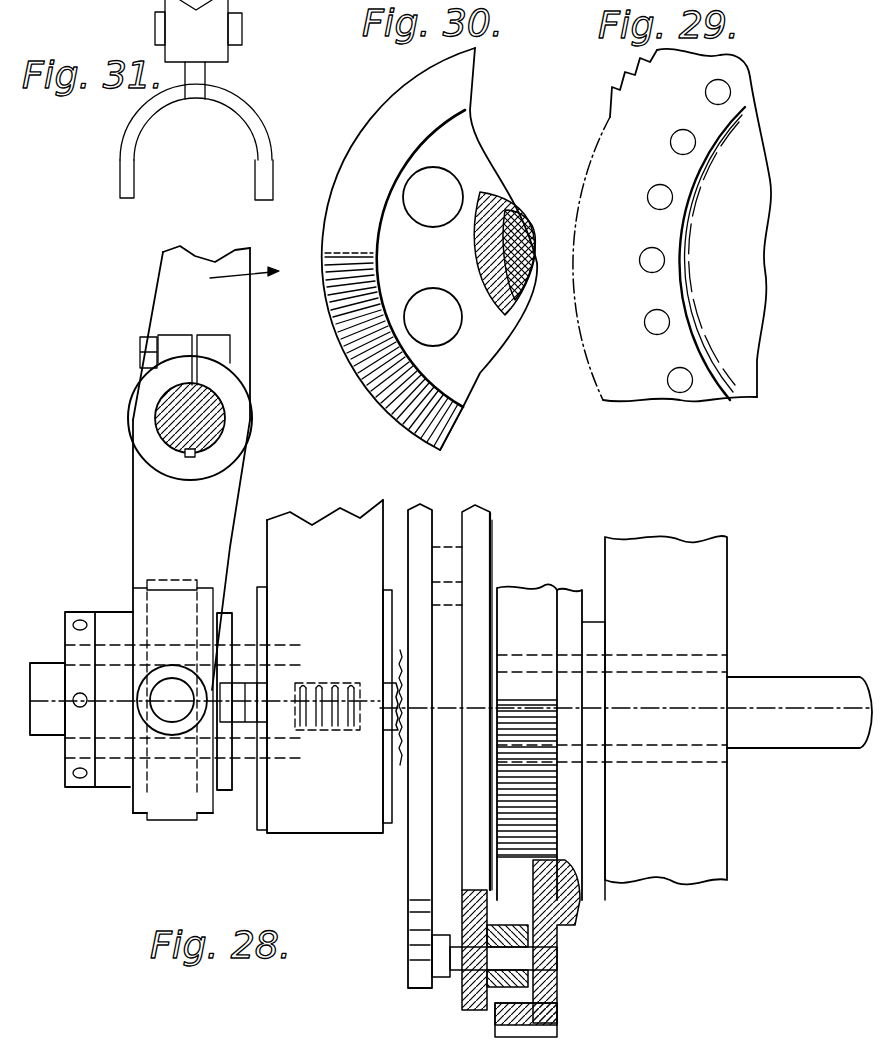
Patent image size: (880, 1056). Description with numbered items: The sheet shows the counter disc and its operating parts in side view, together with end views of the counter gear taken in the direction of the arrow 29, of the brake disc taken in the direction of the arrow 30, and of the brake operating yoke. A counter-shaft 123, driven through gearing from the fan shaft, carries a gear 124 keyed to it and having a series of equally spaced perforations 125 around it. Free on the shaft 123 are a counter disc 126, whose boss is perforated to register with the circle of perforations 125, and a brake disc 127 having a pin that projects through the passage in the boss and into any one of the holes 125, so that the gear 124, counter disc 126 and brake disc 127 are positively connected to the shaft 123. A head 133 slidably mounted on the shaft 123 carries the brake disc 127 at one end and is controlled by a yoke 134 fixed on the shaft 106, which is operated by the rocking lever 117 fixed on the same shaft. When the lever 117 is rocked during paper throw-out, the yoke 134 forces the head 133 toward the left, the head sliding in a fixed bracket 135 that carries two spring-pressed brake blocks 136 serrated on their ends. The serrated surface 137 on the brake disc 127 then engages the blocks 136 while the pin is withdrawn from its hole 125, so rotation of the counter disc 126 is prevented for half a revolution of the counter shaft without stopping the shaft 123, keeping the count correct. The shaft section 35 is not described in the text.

In FIG. 28, the shaft section 35 is at (713, 867).
In FIG. 31, the shaft 106 is at (235, 30).
In FIG. 28, the shaft 106 is at (172, 412).
In FIG. 28, the rocking lever 117 is at (163, 292).
In FIG. 30, the counter-shaft 123 is at (523, 246).
In FIG. 29, the counter-shaft 123 is at (574, 210).
In FIG. 28, the counter-shaft 123 is at (48, 672).
In FIG. 29, the gear 124 is at (596, 392).
In FIG. 28, the gear 124 is at (522, 605).
In FIG. 29, the perforations 125 is at (676, 380).
In FIG. 28, the perforations 125 is at (550, 953).
In FIG. 28, the counter disc 126 is at (473, 1010).
In FIG. 30, the brake disc 127 is at (475, 172).
In FIG. 28, the brake disc 127 is at (417, 870).
In FIG. 28, the head 133 is at (212, 806).
In FIG. 31, the yoke 134 is at (135, 137).
In FIG. 28, the yoke 134 is at (147, 525).
In FIG. 28, the fixed bracket 135 is at (330, 822).
In FIG. 28, the brake blocks 136 is at (388, 720).
In FIG. 30, the serrated surface 137 is at (380, 377).
In FIG. 28, the serrated surface 137 is at (400, 763).
In FIG. 28, the arrow 30 is at (408, 550).
In FIG. 28, the arrow 29 is at (607, 983).